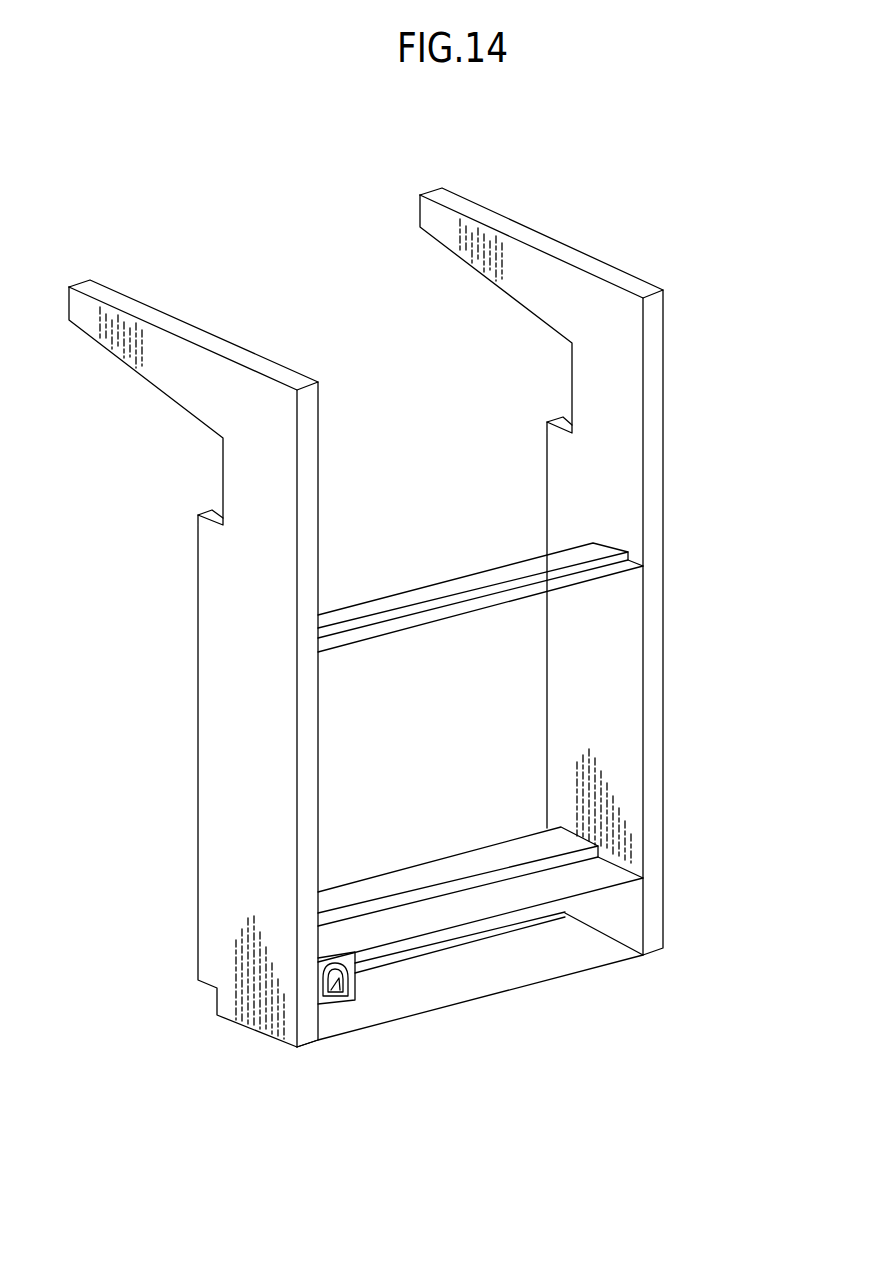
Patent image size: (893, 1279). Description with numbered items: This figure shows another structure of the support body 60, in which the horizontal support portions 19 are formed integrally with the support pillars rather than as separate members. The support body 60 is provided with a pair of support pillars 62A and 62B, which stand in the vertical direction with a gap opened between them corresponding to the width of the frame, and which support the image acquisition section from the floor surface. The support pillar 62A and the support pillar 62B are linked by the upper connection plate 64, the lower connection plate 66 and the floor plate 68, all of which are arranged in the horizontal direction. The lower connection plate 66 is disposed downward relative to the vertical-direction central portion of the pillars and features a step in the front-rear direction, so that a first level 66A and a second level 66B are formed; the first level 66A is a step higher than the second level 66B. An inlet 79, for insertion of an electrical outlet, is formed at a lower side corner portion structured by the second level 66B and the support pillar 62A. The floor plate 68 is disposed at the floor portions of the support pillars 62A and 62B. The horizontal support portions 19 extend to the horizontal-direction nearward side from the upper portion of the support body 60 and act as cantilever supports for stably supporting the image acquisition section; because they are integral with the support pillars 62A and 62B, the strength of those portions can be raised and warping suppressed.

The support body 60 is at (609, 195).
The horizontal support portions 19 is at (160, 316).
The upper connection plate 64 is at (597, 550).
The support pillar 62A is at (657, 712).
The support pillar 62B is at (217, 808).
The lower connection plate 66 is at (698, 1078).
The first level 66A is at (537, 848).
The second level 66B is at (592, 875).
The floor plate 68 is at (442, 992).
The inlet 79 is at (340, 998).